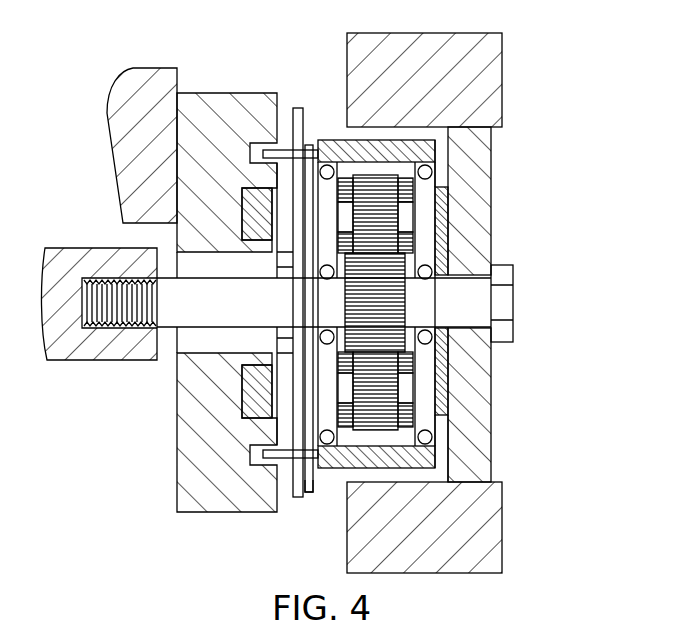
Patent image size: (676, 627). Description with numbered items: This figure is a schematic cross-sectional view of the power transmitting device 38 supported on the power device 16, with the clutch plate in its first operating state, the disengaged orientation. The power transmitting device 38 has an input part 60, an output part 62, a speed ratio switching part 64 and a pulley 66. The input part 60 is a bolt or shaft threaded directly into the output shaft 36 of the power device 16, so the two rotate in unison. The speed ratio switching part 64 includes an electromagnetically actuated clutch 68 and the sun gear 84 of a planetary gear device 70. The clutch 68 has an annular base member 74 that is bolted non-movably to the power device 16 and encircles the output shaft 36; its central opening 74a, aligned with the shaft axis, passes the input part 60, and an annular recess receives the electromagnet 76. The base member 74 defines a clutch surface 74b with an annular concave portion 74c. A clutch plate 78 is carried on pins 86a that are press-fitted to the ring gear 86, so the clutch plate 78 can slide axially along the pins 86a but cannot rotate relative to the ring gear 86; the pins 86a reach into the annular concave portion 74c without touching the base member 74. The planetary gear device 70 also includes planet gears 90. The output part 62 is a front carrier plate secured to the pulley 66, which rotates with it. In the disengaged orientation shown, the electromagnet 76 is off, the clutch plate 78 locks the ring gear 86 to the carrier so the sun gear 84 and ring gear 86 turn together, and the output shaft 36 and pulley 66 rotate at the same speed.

The power transmitting device 38 is at (158, 28).
The power device 16 is at (138, 97).
The output shaft 36 is at (83, 360).
The input part 60 is at (243, 315).
The electromagnetically actuated clutch 68 is at (232, 88).
The base member 74 is at (210, 470).
The central opening 74a is at (205, 252).
The clutch surface 74b is at (282, 110).
The annular concave portion 74c is at (310, 143).
The electromagnet 76 is at (255, 222).
The clutch plate 78 is at (305, 492).
The ring gear 86 is at (385, 150).
The pins 86a is at (283, 458).
The sun gear 84 is at (390, 333).
The planetary gear device 70 is at (446, 148).
The speed ratio switching part 64 is at (446, 181).
The planet gears 90 is at (427, 408).
The output part 62 is at (477, 233).
The pulley 66 is at (473, 60).